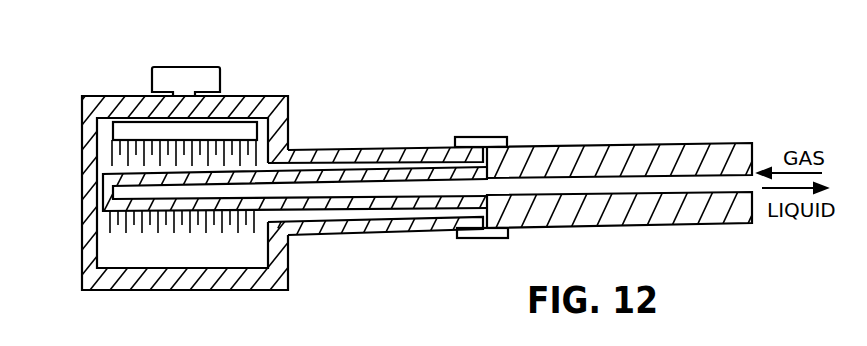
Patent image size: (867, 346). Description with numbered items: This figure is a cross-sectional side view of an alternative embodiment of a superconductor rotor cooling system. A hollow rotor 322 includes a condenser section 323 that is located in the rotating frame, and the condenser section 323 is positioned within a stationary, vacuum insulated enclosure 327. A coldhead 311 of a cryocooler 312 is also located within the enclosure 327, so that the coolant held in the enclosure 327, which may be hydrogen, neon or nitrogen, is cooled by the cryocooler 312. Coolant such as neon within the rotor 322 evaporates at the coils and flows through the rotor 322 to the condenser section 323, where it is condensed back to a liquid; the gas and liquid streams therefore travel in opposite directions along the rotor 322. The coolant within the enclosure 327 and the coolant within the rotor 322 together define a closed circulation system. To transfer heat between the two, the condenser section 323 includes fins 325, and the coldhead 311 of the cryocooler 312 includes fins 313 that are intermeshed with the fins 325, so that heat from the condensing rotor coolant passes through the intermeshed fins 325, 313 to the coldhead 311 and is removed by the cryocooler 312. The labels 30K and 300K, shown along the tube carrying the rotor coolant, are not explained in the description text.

The cryocooler 312 is at (187, 65).
The coldhead 311 is at (258, 122).
The fins 313 is at (112, 148).
The outer tube 30K is at (291, 149).
The tube coupling 300K is at (481, 172).
The hollow rotor 322 is at (563, 146).
The condenser section 323 is at (115, 197).
The fins 325 is at (200, 228).
The enclosure 327 is at (160, 290).